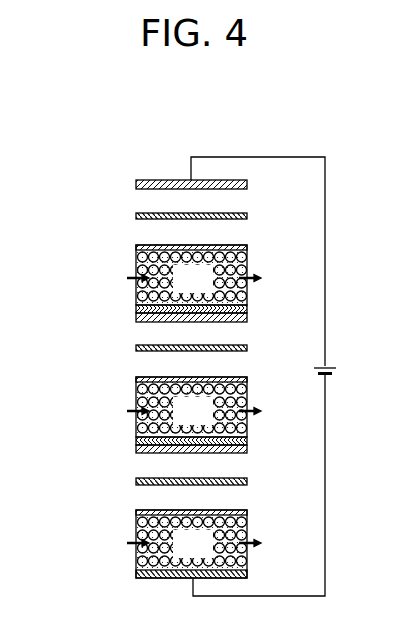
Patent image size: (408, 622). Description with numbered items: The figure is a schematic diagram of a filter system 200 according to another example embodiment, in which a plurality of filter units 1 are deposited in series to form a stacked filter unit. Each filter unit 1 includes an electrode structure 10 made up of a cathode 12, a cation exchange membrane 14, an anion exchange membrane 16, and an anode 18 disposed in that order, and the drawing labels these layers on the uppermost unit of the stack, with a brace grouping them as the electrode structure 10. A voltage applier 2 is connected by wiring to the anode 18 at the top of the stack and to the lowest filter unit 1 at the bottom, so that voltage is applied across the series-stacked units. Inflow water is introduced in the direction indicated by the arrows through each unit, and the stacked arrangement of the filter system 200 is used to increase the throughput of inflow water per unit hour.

The filter system 200 is at (210, 117).
The filter unit 1 is at (166, 168).
The voltage applier 2 is at (329, 366).
The electrode structure 10 is at (72, 182).
The cathode 12 is at (135, 311).
The cation exchange membrane 14 is at (135, 247).
The anion exchange membrane 16 is at (135, 216).
The anode 18 is at (135, 185).